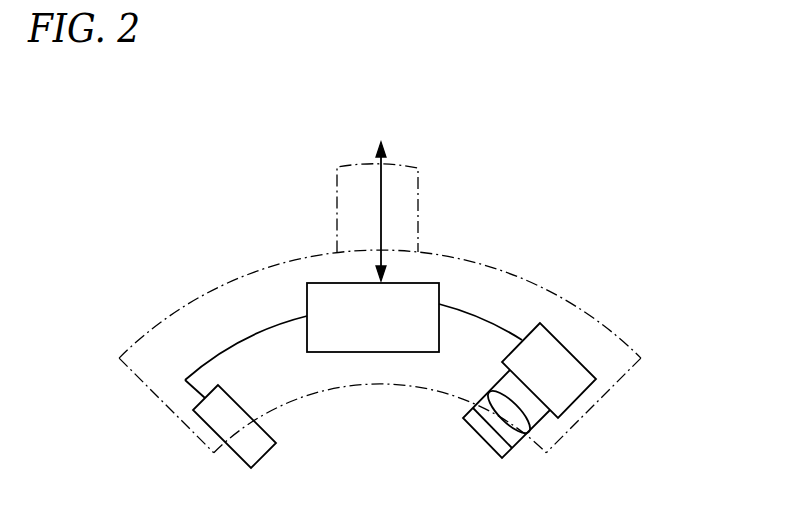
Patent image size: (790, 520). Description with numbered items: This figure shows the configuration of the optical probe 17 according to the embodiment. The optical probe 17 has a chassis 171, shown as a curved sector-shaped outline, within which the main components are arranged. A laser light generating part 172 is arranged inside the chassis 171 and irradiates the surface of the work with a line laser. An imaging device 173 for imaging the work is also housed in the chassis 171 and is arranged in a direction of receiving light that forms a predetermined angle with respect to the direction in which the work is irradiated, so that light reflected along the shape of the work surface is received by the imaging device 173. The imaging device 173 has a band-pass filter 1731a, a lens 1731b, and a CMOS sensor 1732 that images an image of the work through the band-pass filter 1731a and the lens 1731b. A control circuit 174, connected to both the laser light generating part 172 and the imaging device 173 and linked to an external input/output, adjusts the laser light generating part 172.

The optical probe 17 is at (542, 222).
The chassis 171 is at (203, 297).
The laser light generating part 172 is at (193, 410).
The imaging device 173 is at (510, 371).
The band-pass filter 1731a is at (463, 418).
The lens 1731b is at (530, 431).
The CMOS sensor 1732 is at (597, 380).
The control circuit 174 is at (306, 285).